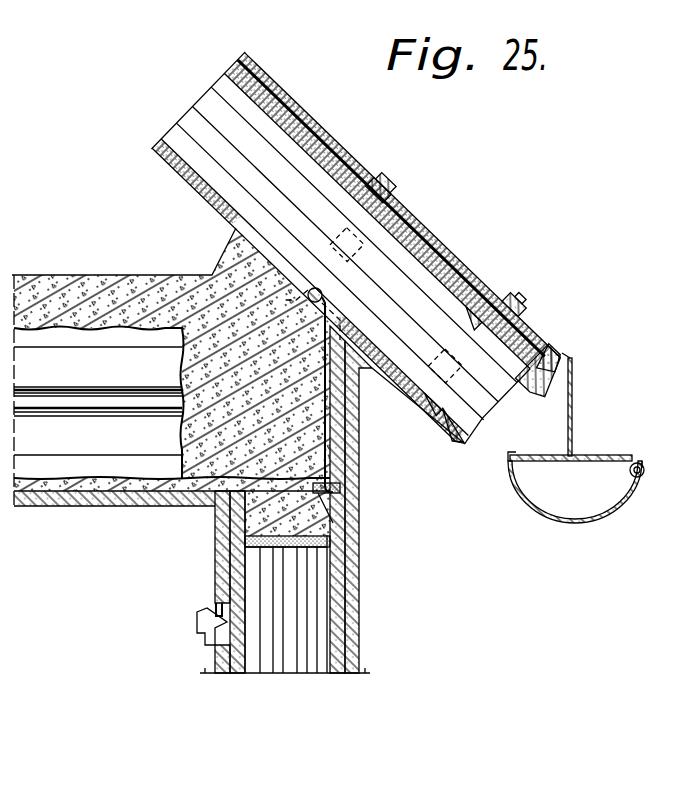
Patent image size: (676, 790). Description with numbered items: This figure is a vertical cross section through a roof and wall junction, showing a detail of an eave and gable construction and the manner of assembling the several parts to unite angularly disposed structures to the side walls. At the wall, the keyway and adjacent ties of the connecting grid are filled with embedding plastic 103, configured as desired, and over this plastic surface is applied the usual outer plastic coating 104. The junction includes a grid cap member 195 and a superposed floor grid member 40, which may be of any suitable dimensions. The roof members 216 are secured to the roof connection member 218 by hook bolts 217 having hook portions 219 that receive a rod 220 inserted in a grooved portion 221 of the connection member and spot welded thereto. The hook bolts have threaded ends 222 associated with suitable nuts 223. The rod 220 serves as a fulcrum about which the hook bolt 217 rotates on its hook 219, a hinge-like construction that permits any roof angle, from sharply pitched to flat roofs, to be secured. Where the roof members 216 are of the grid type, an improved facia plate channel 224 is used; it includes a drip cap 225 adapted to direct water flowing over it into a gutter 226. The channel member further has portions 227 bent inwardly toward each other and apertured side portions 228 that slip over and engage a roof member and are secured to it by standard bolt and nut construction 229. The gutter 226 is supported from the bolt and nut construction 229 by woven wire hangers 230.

The floor grid member 40 is at (115, 454).
The embedding plastic 103 is at (232, 588).
The outer plastic coating 104 is at (220, 568).
The grid cap member 195 is at (345, 540).
The roof members 216 is at (318, 192).
The hook bolts 217 is at (383, 245).
The roof connection member 218 is at (335, 458).
The hook portions 219 is at (337, 308).
The rod 220 is at (323, 289).
The grooved portion 221 is at (338, 263).
The threaded ends 222 is at (395, 215).
The nuts 223 is at (378, 218).
The facia plate channel 224 is at (487, 410).
The drip cap 225 is at (547, 397).
The gutter 226 is at (610, 485).
The portions bent inwardly 227 is at (543, 340).
The side portions 228 is at (490, 307).
The bolt and nut construction 229 is at (527, 303).
The woven wire hangers 230 is at (574, 426).